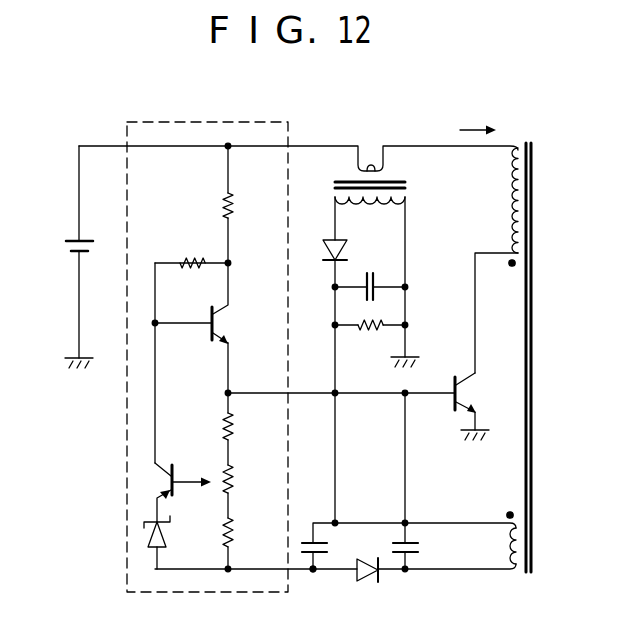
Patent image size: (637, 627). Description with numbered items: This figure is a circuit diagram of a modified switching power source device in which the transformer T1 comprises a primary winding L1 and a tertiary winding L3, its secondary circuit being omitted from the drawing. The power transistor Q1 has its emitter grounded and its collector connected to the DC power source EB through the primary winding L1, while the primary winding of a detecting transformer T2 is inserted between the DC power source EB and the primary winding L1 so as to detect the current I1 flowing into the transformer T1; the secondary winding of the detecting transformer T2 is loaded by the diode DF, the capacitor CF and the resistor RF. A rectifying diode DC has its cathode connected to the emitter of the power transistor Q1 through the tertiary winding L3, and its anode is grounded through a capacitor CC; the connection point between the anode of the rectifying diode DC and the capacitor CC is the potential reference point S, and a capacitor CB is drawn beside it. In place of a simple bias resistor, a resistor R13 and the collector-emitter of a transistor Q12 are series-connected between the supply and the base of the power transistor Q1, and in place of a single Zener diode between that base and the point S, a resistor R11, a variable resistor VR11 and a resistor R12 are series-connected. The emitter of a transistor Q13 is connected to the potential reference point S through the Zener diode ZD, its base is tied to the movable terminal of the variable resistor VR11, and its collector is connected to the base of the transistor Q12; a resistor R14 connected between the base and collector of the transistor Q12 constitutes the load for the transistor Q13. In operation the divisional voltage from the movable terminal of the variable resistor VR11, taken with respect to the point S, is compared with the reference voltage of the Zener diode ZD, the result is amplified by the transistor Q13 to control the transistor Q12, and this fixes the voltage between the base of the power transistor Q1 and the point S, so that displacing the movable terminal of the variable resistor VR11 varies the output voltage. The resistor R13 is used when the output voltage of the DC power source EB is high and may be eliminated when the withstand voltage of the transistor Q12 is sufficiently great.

The DC power source EB is at (71, 257).
The resistor R13 is at (249, 208).
The resistor R14 is at (193, 247).
The transistor Q12 is at (241, 303).
The resistor R11 is at (249, 428).
The variable resistor VR11 is at (231, 480).
The resistor R12 is at (249, 534).
The transistor Q13 is at (151, 492).
The Zener diode ZD is at (185, 538).
The detecting transformer T2 is at (413, 184).
The diode DF is at (324, 262).
The capacitor CF is at (370, 275).
The resistor RF is at (370, 342).
The power transistor Q1 is at (479, 401).
The primary winding L1 is at (495, 207).
The transformer T1 is at (528, 137).
The current I1 is at (478, 115).
The capacitor CC is at (329, 551).
The capacitor CB is at (422, 551).
The potential reference point S is at (313, 572).
The rectifying diode DC is at (373, 586).
The tertiary winding L3 is at (499, 539).